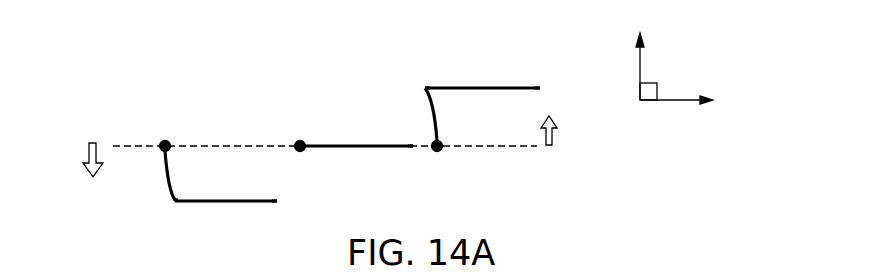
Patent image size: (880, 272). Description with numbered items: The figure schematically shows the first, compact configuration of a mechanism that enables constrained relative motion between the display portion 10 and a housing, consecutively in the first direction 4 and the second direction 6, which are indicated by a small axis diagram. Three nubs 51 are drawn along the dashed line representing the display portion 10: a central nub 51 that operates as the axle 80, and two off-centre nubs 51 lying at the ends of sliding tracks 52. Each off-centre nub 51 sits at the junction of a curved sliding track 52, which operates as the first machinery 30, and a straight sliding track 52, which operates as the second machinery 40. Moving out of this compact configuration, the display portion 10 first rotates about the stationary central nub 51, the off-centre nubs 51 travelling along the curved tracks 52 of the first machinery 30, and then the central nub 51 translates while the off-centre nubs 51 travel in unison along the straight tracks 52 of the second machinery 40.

The display portion 10 is at (130, 145).
The nub 51 is at (165, 140).
The first machinery 30 is at (167, 170).
The sliding track 52 is at (173, 194).
The second machinery 40 is at (210, 203).
The axle 80 is at (303, 153).
The first direction 4 is at (640, 83).
The second direction 6 is at (672, 100).